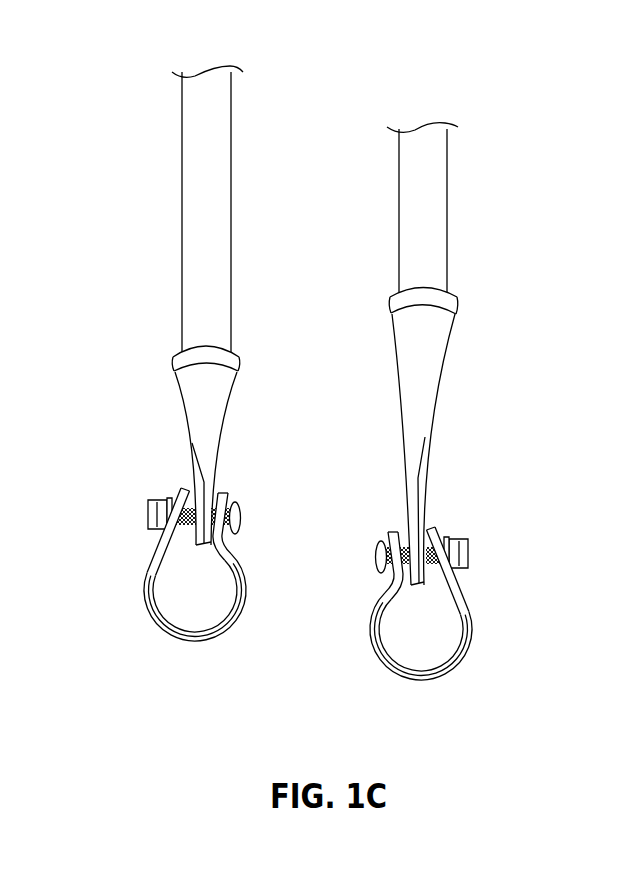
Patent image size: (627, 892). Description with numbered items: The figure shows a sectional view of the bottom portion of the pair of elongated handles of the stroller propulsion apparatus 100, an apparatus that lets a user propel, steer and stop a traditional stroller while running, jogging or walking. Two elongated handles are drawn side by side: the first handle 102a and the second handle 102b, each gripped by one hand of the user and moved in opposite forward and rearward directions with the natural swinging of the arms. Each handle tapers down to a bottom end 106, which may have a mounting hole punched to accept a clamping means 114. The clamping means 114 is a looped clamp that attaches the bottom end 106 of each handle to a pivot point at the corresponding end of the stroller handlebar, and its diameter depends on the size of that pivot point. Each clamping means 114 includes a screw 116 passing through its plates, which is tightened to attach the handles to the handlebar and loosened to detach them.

The stroller propulsion apparatus 100 is at (85, 67).
The first handle 102a is at (428, 200).
The second handle 102b is at (205, 207).
The bottom end 106 is at (407, 517).
The clamping means 114 is at (247, 600).
The screw 116 is at (148, 505).